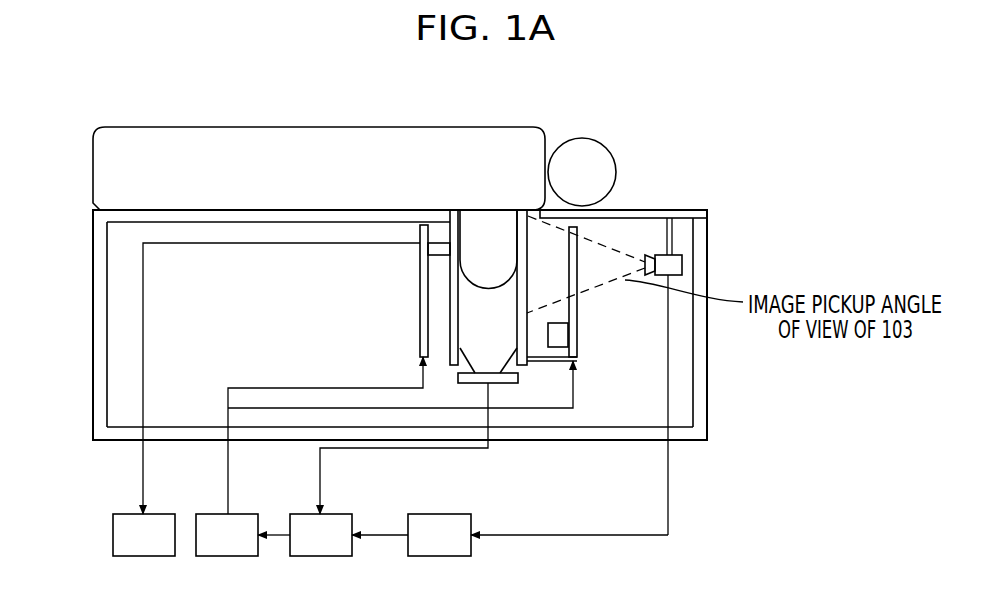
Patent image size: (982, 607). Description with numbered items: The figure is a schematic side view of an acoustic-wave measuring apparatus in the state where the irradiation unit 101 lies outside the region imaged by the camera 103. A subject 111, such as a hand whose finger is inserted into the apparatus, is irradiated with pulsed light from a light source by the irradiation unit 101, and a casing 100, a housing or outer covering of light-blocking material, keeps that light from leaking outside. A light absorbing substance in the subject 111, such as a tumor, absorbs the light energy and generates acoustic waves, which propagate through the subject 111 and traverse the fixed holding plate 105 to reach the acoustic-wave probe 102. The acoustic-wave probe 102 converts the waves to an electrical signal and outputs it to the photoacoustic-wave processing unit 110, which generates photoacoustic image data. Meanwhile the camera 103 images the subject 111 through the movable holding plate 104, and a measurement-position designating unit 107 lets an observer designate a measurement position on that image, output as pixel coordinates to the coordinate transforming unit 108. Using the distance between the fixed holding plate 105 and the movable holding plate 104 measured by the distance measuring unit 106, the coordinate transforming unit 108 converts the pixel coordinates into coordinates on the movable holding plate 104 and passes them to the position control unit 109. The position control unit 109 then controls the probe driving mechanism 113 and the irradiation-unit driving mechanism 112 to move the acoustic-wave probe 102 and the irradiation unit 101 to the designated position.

The casing 100 is at (103, 377).
The irradiation unit 101 is at (560, 337).
The acoustic-wave probe 102 is at (430, 248).
The camera 103 is at (675, 262).
The movable holding plate 104 is at (523, 315).
The fixed holding plate 105 is at (452, 332).
The distance measuring unit 106 is at (510, 370).
The measurement-position designating unit 107 is at (440, 512).
The coordinate transforming unit 108 is at (338, 512).
The position control unit 109 is at (242, 512).
The photoacoustic-wave processing unit 110 is at (160, 512).
The subject 111 is at (484, 240).
The irradiation-unit driving mechanism 112 is at (573, 243).
The probe driving mechanism 113 is at (423, 308).